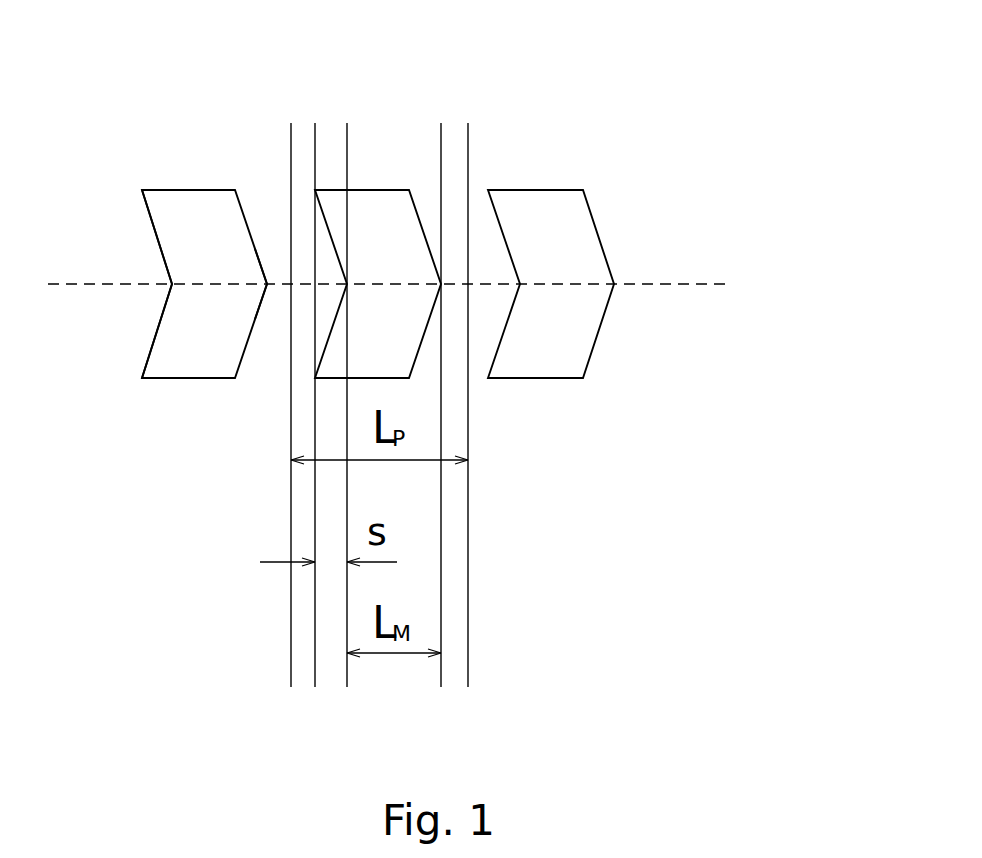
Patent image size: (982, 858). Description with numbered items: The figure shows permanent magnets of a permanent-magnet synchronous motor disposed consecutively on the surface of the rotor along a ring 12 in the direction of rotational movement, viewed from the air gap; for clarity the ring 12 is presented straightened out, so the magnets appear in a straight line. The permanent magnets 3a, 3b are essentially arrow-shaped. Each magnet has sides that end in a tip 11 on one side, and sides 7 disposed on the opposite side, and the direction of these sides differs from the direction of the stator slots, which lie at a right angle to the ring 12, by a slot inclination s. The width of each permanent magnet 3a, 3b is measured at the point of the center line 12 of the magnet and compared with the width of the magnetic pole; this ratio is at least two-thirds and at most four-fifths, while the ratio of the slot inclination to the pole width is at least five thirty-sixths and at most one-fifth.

The permanent magnet 3a is at (187, 380).
The permanent magnet 3b is at (368, 190).
The sides of the permanent magnet 7 is at (152, 348).
The tip 11 is at (267, 284).
The ring in the direction of rotational movement 12 is at (705, 284).